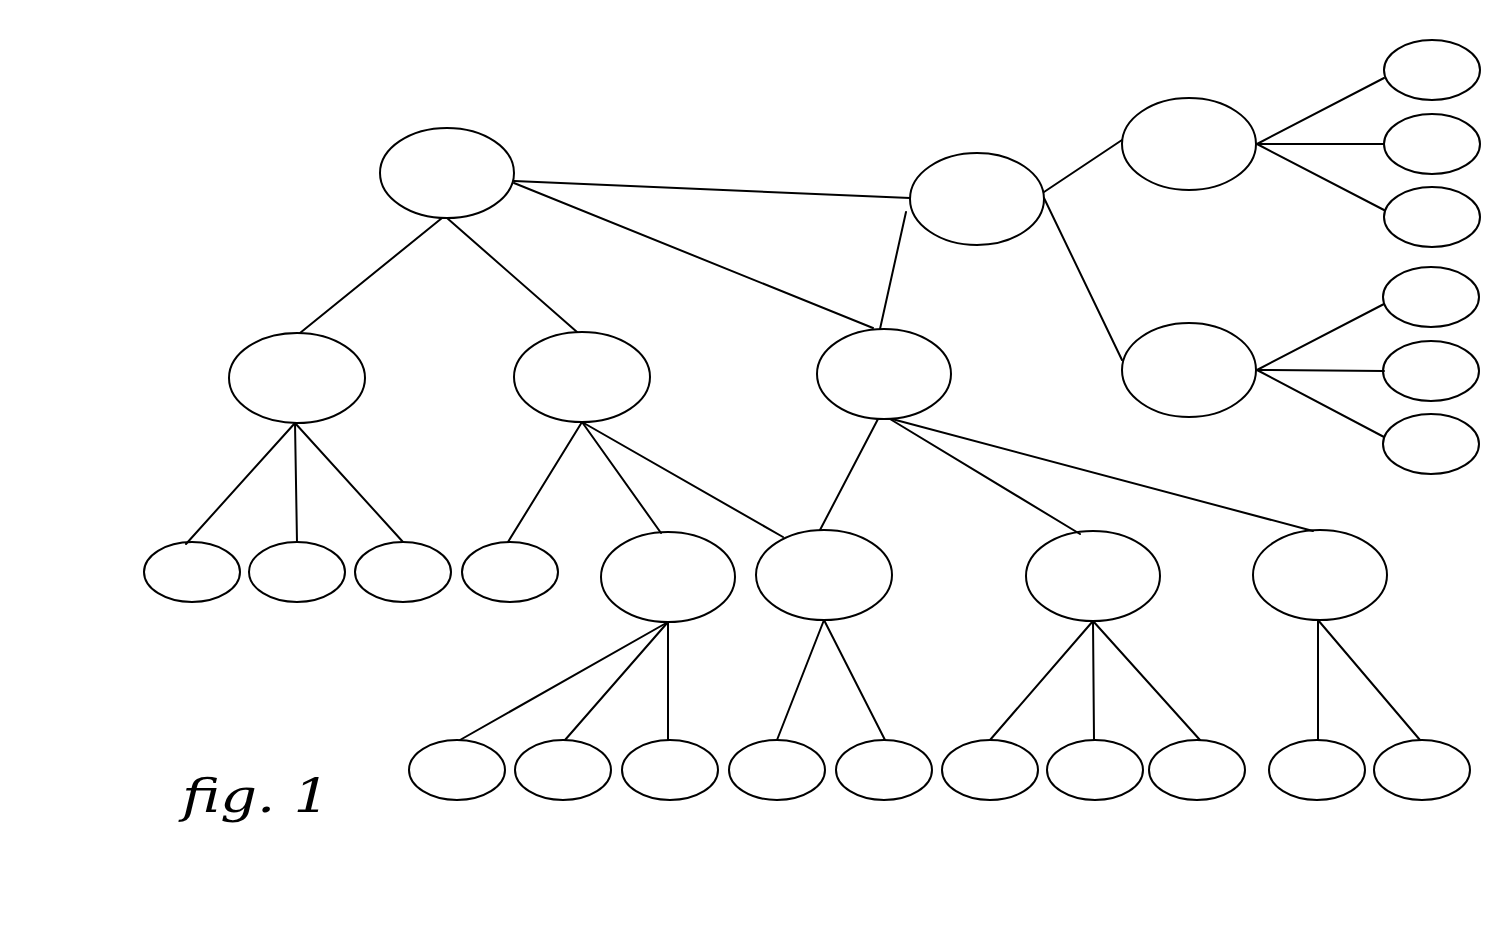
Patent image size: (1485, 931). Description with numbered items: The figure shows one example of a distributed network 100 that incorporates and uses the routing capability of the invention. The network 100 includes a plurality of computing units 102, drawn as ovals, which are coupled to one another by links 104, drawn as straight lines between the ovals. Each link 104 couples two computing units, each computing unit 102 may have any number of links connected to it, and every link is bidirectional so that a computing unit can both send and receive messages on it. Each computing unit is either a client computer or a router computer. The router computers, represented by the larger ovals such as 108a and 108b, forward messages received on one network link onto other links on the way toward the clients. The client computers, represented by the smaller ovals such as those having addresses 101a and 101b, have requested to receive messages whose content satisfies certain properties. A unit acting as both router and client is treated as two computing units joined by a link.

The distributed network 100 is at (607, 112).
The computing unit 102 is at (393, 146).
The link 104 is at (380, 262).
The router computer 108a is at (613, 393).
The router computer 108b is at (864, 588).
The client computer 101a is at (670, 770).
The client computer 101b is at (777, 770).